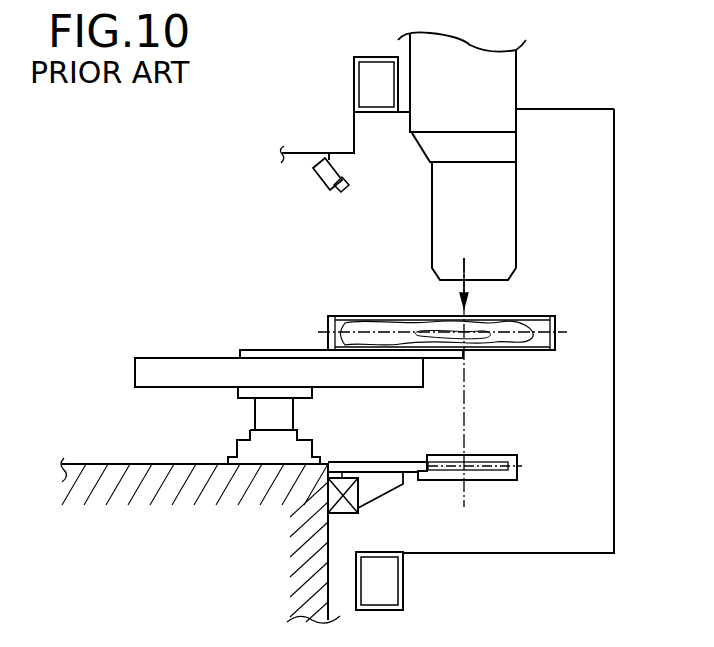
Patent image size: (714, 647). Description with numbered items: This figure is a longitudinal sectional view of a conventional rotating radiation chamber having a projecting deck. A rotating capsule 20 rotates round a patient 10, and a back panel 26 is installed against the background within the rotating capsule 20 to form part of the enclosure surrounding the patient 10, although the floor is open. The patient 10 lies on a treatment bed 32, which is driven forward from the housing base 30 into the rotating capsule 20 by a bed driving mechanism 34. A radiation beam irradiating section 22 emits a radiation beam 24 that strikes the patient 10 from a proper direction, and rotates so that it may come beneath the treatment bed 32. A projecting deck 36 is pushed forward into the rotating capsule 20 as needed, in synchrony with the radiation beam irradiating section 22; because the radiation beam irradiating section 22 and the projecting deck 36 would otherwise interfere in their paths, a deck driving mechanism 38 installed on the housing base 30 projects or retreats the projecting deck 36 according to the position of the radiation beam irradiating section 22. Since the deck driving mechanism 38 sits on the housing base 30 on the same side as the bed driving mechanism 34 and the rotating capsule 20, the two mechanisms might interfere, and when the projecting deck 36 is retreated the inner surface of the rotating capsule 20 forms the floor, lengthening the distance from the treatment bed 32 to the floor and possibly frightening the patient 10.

The patient 10 is at (525, 320).
The rotating capsule 20 is at (560, 108).
The radiation beam irradiating section 22 is at (432, 207).
The radiation beam 24 is at (461, 290).
The back panel 26 is at (616, 157).
The housing base 30 is at (92, 464).
The treatment bed 32 is at (328, 329).
The bed driving mechanism 34 is at (135, 372).
The projecting deck 36 is at (380, 460).
The deck driving mechanism 38 is at (378, 500).